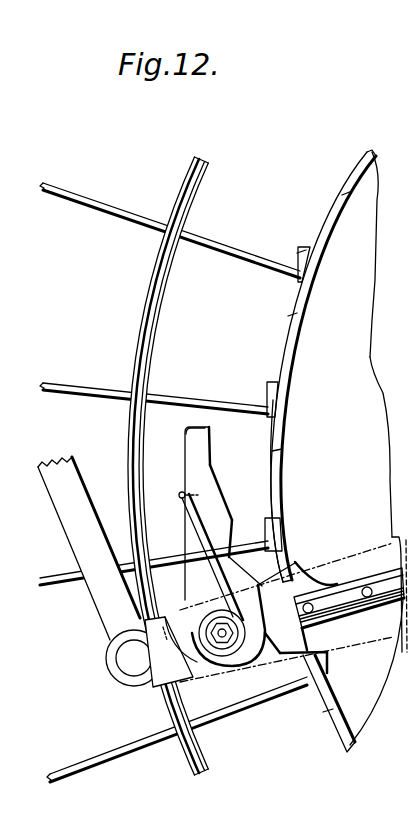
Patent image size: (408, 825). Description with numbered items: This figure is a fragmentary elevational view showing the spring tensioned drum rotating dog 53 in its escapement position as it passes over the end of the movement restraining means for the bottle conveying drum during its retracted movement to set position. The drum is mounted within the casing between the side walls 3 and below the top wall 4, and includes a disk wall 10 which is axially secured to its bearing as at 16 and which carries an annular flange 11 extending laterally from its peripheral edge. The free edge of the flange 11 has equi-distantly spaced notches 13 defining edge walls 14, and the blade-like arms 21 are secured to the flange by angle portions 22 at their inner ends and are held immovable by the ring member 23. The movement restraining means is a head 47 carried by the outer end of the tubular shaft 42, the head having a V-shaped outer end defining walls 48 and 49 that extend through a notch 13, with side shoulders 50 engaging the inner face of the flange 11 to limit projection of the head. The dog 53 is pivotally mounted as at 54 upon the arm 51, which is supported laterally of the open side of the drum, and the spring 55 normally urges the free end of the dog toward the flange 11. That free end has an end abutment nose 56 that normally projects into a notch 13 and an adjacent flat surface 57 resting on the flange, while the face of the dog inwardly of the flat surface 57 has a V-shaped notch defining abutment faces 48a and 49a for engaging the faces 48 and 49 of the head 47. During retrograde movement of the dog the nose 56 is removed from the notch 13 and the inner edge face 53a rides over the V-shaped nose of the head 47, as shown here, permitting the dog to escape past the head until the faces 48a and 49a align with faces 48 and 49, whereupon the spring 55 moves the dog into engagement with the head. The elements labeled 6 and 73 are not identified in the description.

The side walls 3 is at (387, 254).
The top wall 4 is at (407, 120).
The frame member 6 is at (407, 724).
The disk wall 10 is at (352, 362).
The annular flange 11 is at (305, 308).
The notches 13 is at (285, 370).
The edge walls 14 is at (287, 327).
The securing point 16 is at (402, 370).
The blade-like arms 21 is at (118, 216).
The angle portions 22 is at (298, 258).
The ring member 23 is at (190, 195).
The tubular shaft 42 is at (400, 609).
The head 47 is at (327, 635).
The wall 48 is at (277, 662).
The abutment face 48a is at (262, 573).
The wall 49 is at (313, 576).
The abutment face 49a is at (233, 528).
The side shoulders 50 is at (305, 550).
The arm 51 is at (165, 680).
The dog 53 is at (195, 474).
The inner edge face 53a is at (275, 658).
The pivot 54 is at (223, 642).
The spring 55 is at (193, 527).
The end abutment nose 56 is at (195, 430).
The flat surface 57 is at (218, 483).
The boss 73 is at (125, 668).